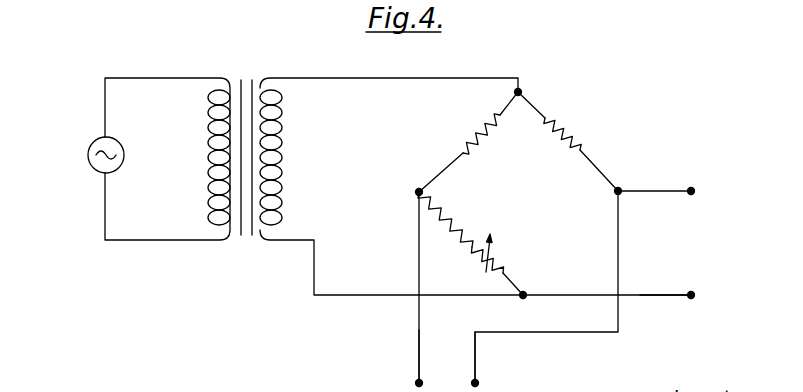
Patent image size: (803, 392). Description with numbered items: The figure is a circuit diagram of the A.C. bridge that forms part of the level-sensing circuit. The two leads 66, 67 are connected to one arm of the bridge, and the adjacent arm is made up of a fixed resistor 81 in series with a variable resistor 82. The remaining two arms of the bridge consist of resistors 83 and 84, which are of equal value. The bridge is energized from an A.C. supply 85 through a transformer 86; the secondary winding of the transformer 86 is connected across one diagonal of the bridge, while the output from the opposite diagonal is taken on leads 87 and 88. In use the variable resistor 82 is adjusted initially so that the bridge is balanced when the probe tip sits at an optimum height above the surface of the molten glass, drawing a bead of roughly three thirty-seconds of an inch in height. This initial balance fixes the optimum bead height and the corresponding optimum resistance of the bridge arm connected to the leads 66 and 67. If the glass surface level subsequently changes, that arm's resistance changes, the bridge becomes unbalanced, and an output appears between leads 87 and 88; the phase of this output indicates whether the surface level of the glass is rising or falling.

The A.C. supply 85 is at (115, 139).
The transformer 86 is at (248, 53).
The resistor 83 is at (481, 122).
The resistor 84 is at (560, 118).
The fixed resistor 81 is at (447, 208).
The variable resistor 82 is at (493, 253).
The lead 66 is at (653, 181).
The lead 67 is at (662, 297).
The output lead 87 is at (418, 348).
The output lead 88 is at (475, 352).